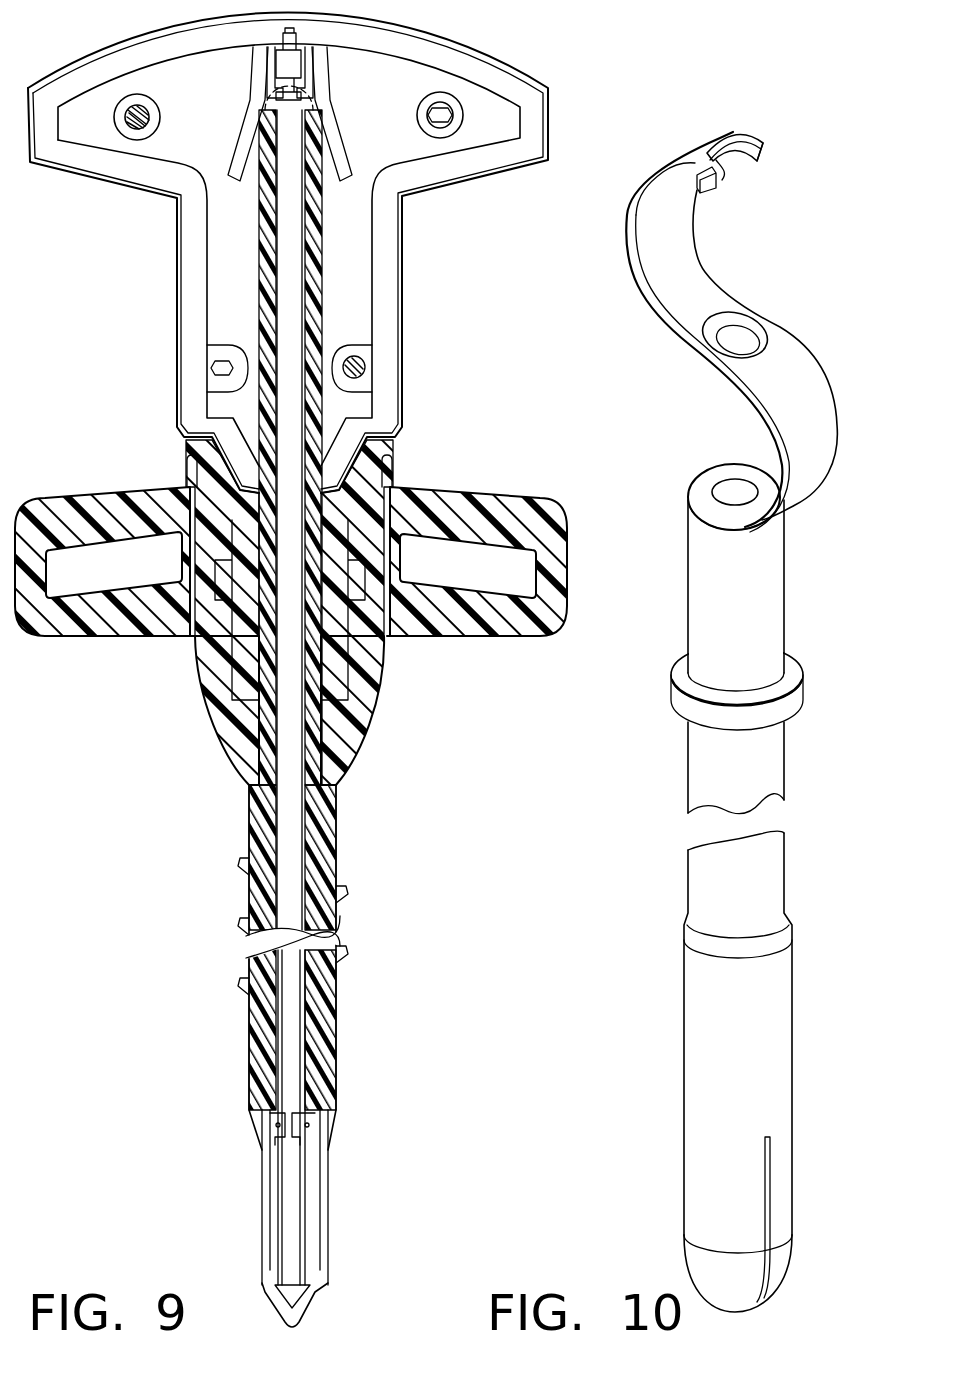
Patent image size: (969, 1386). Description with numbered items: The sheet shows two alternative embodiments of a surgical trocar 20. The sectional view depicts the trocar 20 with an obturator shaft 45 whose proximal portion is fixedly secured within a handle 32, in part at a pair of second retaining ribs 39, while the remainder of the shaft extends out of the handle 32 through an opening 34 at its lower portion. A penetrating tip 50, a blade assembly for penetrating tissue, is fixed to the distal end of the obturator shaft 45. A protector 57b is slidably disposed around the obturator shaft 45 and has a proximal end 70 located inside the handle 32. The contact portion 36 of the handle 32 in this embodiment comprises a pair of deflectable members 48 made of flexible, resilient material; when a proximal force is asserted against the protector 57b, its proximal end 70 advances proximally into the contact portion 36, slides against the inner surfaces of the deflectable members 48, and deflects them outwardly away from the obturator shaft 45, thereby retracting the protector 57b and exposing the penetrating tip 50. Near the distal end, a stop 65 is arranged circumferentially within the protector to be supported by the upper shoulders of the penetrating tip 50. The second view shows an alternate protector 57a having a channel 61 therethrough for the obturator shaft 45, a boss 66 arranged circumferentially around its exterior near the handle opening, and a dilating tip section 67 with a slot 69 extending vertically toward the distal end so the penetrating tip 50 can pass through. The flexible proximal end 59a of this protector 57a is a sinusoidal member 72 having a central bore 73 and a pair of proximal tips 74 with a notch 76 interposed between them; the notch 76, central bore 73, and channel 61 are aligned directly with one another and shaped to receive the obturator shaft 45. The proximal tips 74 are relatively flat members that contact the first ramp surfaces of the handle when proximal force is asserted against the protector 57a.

In FIG. 9, the surgical trocar 20 is at (291, 669).
In FIG. 9, the handle 32 is at (487, 70).
In FIG. 9, the opening 34 is at (310, 492).
In FIG. 9, the contact portion 36 is at (322, 72).
In FIG. 9, the second retaining ribs 39 is at (268, 86).
In FIG. 9, the deflectable members 48 is at (340, 160).
In FIG. 9, the proximal end 70 is at (259, 230).
In FIG. 9, the protector 57b is at (333, 304).
In FIG. 9, the obturator shaft 45 is at (290, 785).
In FIG. 9, the stop 65 is at (307, 1017).
In FIG. 9, the penetrating tip 50 is at (330, 1265).
In FIG. 10, the protector 57a is at (699, 880).
In FIG. 10, the flexible proximal end 59a is at (724, 309).
In FIG. 10, the channel 61 is at (733, 493).
In FIG. 10, the boss 66 is at (680, 673).
In FIG. 10, the dilating tip section 67 is at (780, 1228).
In FIG. 10, the slot 69 is at (769, 1180).
In FIG. 10, the sinusoidal member 72 is at (660, 313).
In FIG. 10, the central bore 73 is at (740, 350).
In FIG. 10, the proximal tips 74 is at (742, 132).
In FIG. 10, the notch 76 is at (723, 167).